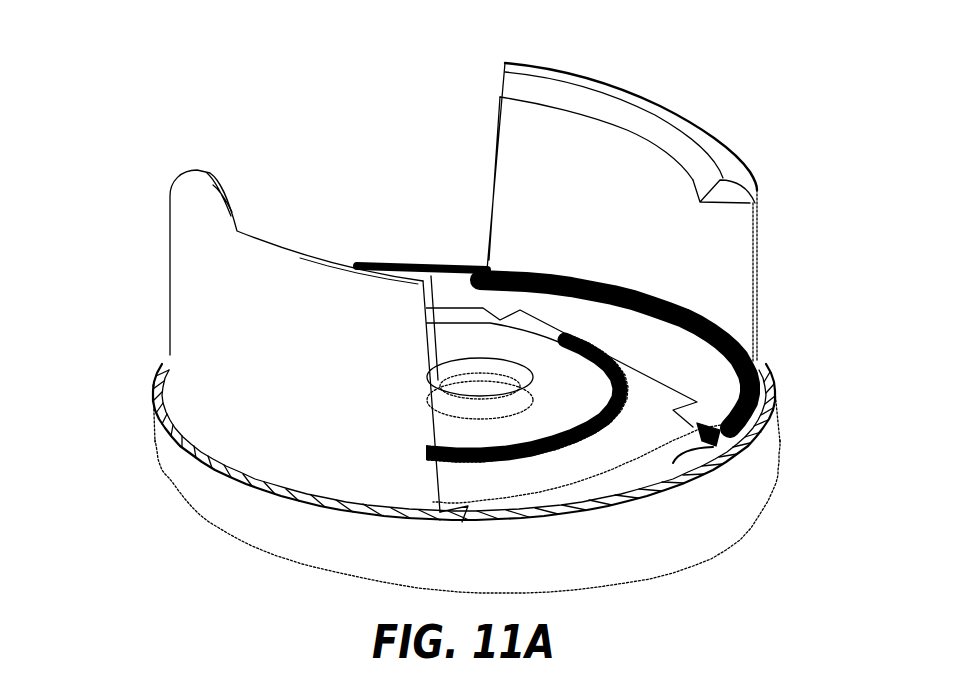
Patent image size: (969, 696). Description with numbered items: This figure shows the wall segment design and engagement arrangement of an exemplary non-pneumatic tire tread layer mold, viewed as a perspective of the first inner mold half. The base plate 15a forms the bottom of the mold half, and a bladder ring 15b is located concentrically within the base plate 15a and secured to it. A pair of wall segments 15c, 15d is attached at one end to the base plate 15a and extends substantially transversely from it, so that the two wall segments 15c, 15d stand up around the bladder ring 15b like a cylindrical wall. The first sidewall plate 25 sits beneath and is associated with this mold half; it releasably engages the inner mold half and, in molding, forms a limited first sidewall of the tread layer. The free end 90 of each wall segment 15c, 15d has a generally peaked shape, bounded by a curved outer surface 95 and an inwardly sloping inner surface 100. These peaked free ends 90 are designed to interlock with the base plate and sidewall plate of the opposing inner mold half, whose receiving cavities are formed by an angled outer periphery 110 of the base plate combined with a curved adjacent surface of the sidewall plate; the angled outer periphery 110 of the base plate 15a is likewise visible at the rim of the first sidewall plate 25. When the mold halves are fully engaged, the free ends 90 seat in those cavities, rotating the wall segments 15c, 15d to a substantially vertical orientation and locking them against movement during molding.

The base plate 15a is at (422, 278).
The bladder ring 15b is at (470, 332).
The wall segment 15c is at (185, 300).
The wall segment 15d is at (730, 157).
The first sidewall plate 25 is at (218, 513).
The free end 90 is at (723, 192).
The curved outer surface 95 is at (190, 197).
The inwardly sloping inner surface 100 is at (222, 187).
The angled outer periphery 110 is at (715, 448).